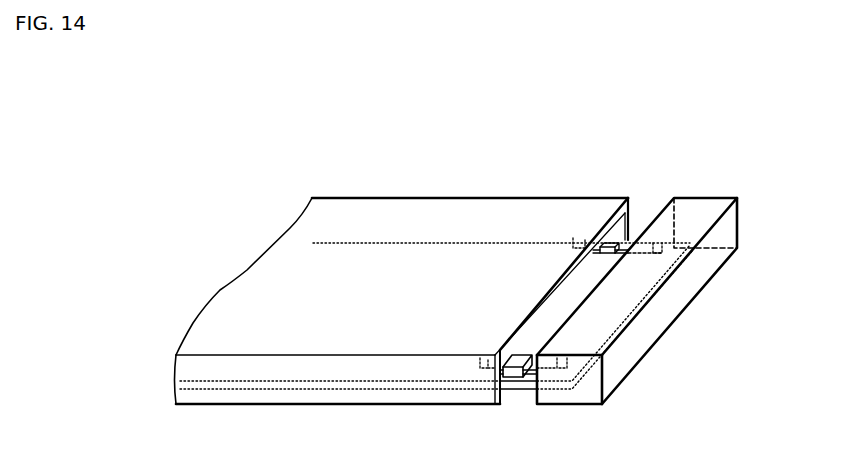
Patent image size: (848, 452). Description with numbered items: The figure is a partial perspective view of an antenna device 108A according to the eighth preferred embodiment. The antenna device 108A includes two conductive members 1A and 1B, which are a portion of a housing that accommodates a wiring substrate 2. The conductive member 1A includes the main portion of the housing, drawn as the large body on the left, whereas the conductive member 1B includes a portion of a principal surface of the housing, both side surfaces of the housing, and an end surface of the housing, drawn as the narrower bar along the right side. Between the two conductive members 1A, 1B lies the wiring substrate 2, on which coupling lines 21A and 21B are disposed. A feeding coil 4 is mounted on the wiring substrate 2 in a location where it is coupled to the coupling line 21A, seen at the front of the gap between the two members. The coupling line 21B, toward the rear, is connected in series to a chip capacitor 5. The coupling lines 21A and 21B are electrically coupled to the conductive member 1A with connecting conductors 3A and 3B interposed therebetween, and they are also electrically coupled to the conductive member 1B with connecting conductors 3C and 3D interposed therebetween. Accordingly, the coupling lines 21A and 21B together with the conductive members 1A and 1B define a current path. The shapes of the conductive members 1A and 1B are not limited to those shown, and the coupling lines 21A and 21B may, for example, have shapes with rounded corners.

The antenna device 108A is at (799, 74).
The conductive member 1A is at (446, 208).
The conductive member 1B is at (700, 210).
The wiring substrate 2 is at (573, 283).
The connecting conductor 3A is at (482, 358).
The connecting conductor 3B is at (579, 238).
The connecting conductor 3C is at (560, 358).
The connecting conductor 3D is at (658, 237).
The feeding coil 4 is at (522, 353).
The chip capacitor 5 is at (605, 243).
The coupling line 21A is at (527, 377).
The coupling line 21B is at (625, 240).